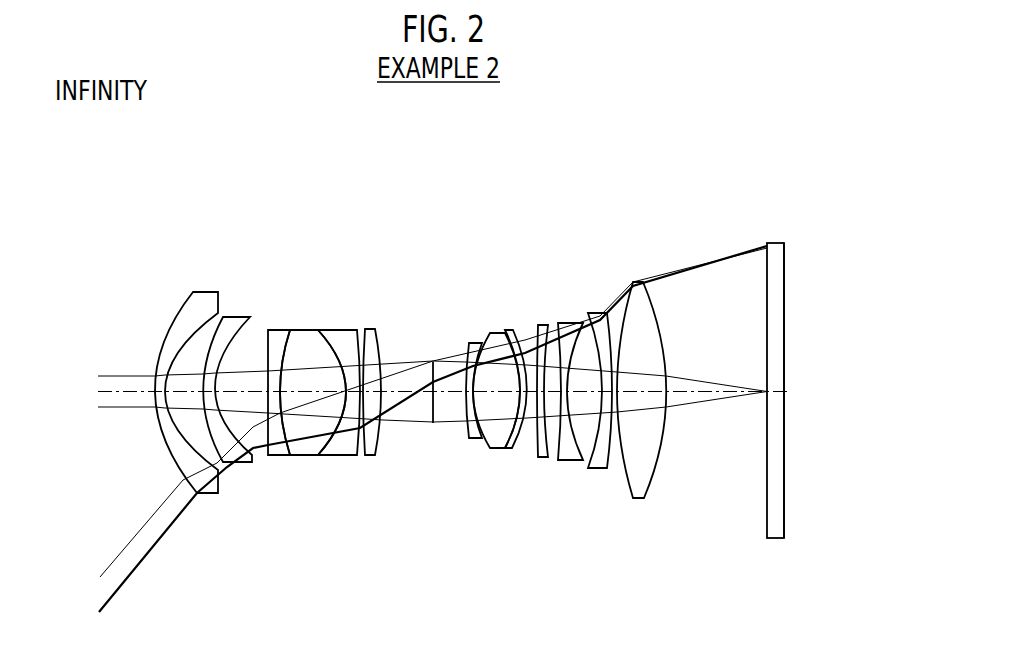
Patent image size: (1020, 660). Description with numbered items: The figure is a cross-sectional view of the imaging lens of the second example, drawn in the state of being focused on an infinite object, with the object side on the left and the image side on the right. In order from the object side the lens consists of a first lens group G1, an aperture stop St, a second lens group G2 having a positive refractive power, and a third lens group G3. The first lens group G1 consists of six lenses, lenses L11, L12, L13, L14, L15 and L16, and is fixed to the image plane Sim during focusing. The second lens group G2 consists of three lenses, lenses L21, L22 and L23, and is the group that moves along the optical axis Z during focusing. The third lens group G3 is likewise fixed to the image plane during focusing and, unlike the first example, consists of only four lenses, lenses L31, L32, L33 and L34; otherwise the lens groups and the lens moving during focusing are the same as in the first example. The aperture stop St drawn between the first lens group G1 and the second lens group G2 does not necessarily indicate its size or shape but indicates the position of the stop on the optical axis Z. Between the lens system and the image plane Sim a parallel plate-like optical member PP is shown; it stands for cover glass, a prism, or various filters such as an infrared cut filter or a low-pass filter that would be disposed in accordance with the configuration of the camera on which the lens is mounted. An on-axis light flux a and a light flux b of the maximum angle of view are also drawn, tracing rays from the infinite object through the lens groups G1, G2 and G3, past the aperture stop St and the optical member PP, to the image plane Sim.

The first lens group G1 is at (373, 156).
The second lens group G2 is at (508, 156).
The third lens group G3 is at (658, 156).
The lens L11 is at (207, 291).
The lens L12 is at (237, 316).
The lens L13 is at (275, 329).
The lens L14 is at (303, 329).
The lens L15 is at (337, 329).
The lens L16 is at (367, 328).
The lens L21 is at (469, 342).
The lens L22 is at (490, 332).
The lens L23 is at (505, 329).
The lens L31 is at (540, 324).
The lens L32 is at (571, 322).
The lens L33 is at (597, 312).
The lens L34 is at (637, 281).
The aperture stop St is at (433, 361).
The optical member PP is at (777, 529).
The image plane Sim is at (785, 520).
The optical axis Z is at (122, 390).
The on-axis light flux a is at (97, 367).
The light flux of the maximum angle of view b is at (97, 570).